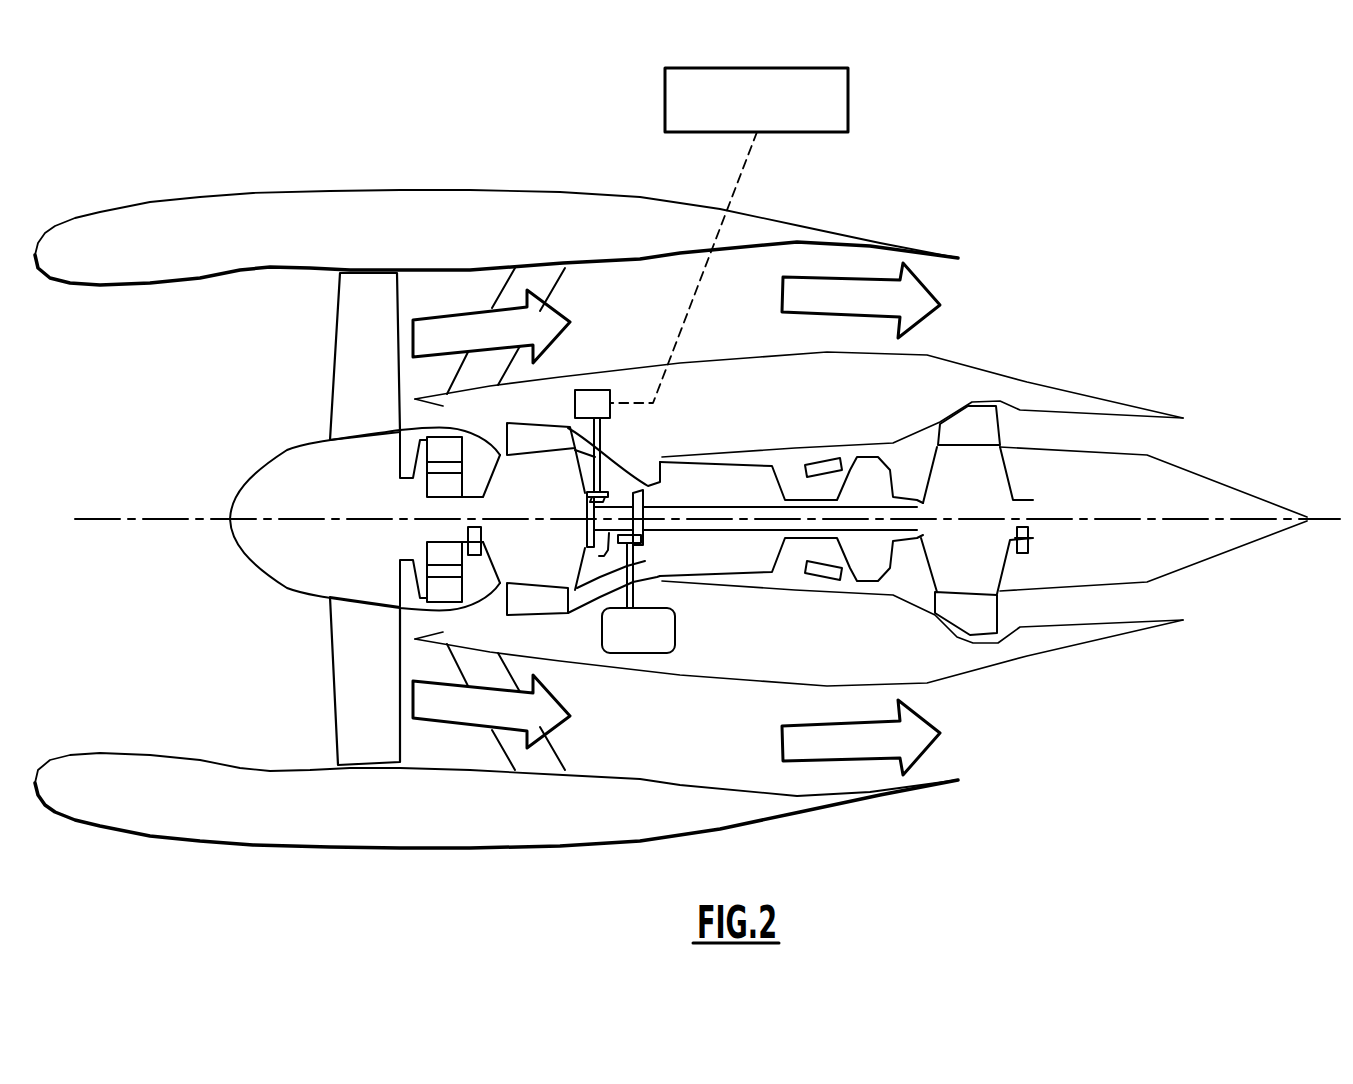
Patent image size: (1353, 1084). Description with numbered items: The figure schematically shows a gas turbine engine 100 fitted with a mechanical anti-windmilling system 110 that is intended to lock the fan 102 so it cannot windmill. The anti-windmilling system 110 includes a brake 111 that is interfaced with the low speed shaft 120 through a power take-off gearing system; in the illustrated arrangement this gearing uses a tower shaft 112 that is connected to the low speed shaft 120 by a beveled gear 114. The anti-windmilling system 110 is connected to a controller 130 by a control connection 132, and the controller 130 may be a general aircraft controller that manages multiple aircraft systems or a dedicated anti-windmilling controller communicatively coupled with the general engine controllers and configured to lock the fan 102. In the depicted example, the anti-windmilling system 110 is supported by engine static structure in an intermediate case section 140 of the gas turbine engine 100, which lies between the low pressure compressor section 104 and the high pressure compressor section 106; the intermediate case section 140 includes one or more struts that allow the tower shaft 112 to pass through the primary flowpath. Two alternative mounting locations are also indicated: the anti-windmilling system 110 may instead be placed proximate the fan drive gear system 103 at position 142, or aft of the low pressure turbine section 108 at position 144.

The gas turbine engine 100 is at (687, 451).
The fan 102 is at (347, 379).
The fan drive gear system 103 is at (416, 519).
The low pressure compressor section 104 is at (573, 538).
The high pressure compressor section 106 is at (937, 522).
The low pressure turbine section 108 is at (968, 425).
The anti-windmilling system 110 is at (605, 375).
The brake 111 is at (593, 404).
The tower shaft 112 is at (597, 455).
The beveled gear 114 is at (615, 495).
The low speed shaft 120 is at (584, 552).
The controller 130 is at (848, 100).
The control connection 132 is at (743, 173).
The intermediate case section 140 is at (599, 556).
The position 142 is at (475, 555).
The position 144 is at (1022, 553).